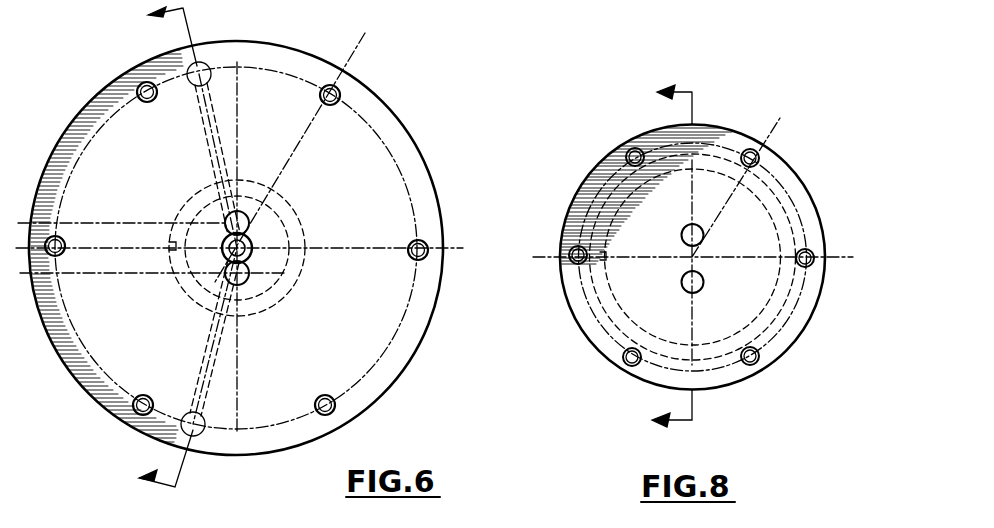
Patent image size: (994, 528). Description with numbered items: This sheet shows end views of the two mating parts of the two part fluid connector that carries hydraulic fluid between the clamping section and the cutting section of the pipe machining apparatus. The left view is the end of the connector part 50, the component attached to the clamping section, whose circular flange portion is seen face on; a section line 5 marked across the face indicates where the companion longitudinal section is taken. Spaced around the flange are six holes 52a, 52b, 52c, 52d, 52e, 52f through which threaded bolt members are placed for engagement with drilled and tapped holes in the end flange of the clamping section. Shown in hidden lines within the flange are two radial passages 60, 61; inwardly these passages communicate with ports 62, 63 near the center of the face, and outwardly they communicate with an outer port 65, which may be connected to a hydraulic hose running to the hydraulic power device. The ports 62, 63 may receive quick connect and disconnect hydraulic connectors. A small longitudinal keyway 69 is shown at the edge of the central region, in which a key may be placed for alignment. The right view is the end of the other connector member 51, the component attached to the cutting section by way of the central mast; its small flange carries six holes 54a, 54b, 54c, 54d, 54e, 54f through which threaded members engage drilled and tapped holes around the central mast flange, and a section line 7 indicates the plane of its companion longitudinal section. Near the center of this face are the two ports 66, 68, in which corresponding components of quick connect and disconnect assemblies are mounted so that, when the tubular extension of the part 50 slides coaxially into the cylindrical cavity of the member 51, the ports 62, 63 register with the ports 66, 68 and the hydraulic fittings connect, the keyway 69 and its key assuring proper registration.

In FIG. 6, the connector part 50 is at (428, 127).
In FIG. 6, the section line 5- 5 is at (178, 247).
In FIG. 6, the port 65 is at (206, 62).
In FIG. 6, the radial passage 61 is at (213, 133).
In FIG. 6, the radial passage 60 is at (210, 352).
In FIG. 6, the port 63 is at (245, 215).
In FIG. 6, the port 62 is at (247, 278).
In FIG. 6, the longitudinal keyway 69 is at (167, 248).
In FIG. 6, the hole 52a is at (137, 86).
In FIG. 6, the hole 52b is at (340, 88).
In FIG. 6, the hole 52c is at (425, 241).
In FIG. 6, the hole 52d is at (334, 414).
In FIG. 6, the hole 52e is at (135, 413).
In FIG. 6, the hole 52f is at (57, 234).
In FIG. 8, the connector member 51 is at (568, 318).
In FIG. 8, the section line 7- 7 is at (661, 257).
In FIG. 8, the port 68 is at (704, 235).
In FIG. 8, the port 66 is at (704, 282).
In FIG. 8, the hole 54a is at (627, 149).
In FIG. 8, the hole 54b is at (759, 153).
In FIG. 8, the hole 54c is at (812, 250).
In FIG. 8, the hole 54d is at (758, 366).
In FIG. 8, the hole 54e is at (623, 366).
In FIG. 8, the hole 54f is at (572, 266).